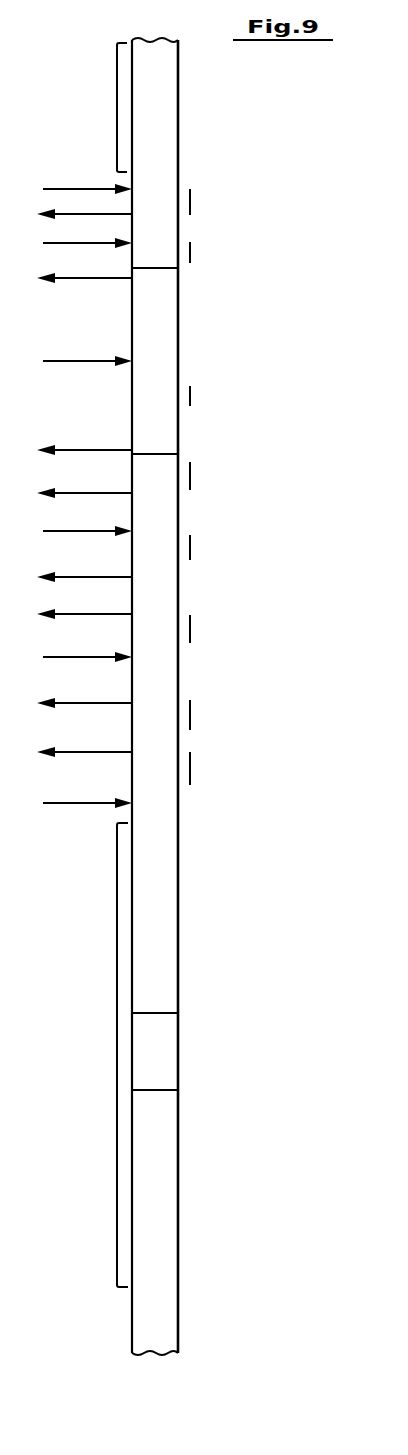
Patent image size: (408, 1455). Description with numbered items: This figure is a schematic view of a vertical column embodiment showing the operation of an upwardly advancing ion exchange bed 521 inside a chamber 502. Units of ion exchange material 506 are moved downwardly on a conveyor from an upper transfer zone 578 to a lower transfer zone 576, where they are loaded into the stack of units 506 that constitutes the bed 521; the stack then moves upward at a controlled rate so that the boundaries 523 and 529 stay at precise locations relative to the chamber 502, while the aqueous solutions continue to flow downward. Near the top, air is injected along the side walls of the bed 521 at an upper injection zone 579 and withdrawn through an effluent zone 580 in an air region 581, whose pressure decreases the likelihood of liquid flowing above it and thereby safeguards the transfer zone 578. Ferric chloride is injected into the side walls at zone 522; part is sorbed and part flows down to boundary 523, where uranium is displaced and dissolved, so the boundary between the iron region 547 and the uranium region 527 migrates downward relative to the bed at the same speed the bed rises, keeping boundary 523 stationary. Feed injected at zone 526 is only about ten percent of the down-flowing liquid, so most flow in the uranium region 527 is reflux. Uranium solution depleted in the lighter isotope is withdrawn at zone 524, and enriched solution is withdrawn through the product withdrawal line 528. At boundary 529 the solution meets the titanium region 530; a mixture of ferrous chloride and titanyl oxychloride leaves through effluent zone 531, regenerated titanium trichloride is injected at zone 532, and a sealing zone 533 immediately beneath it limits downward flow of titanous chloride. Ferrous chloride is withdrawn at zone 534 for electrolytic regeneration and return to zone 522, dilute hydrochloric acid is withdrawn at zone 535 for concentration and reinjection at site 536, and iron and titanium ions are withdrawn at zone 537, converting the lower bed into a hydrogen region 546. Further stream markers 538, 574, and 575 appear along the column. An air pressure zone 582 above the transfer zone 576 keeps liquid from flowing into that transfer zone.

The chamber 502 is at (179, 820).
The units of ion exchange material 506 is at (163, 1051).
The ion exchange bed 521 is at (165, 327).
The ferric chloride injection zone 522 is at (102, 242).
The boundary 523 is at (170, 263).
The withdrawal zone 524 is at (112, 277).
The feed injection zone 526 is at (114, 360).
The uranium region 527 is at (190, 396).
The product withdrawal line 528 is at (114, 449).
The boundary 529 is at (172, 453).
The titanium region 530 is at (190, 476).
The effluent zone 531 is at (110, 492).
The titanous chloride injection zone 532 is at (102, 530).
The sealing zone 533 is at (190, 546).
The ferrous chloride withdrawal zone 534 is at (110, 576).
The hydrochloric acid withdrawal zone 535 is at (110, 613).
The hydrochloric acid injection site 536 is at (104, 656).
The metal ion withdrawal zone 537 is at (112, 702).
The zone 538 is at (190, 717).
The hydrogen region 546 is at (190, 630).
The iron region 547 is at (190, 253).
The outlet stream 574 is at (112, 751).
The inlet stream 575 is at (104, 798).
The transfer zone 576 is at (117, 1058).
The transfer zone 578 is at (117, 115).
The air injection zone 579 is at (102, 181).
The effluent zone 580 is at (102, 212).
The air region 581 is at (190, 203).
The air pressure zone 582 is at (190, 770).